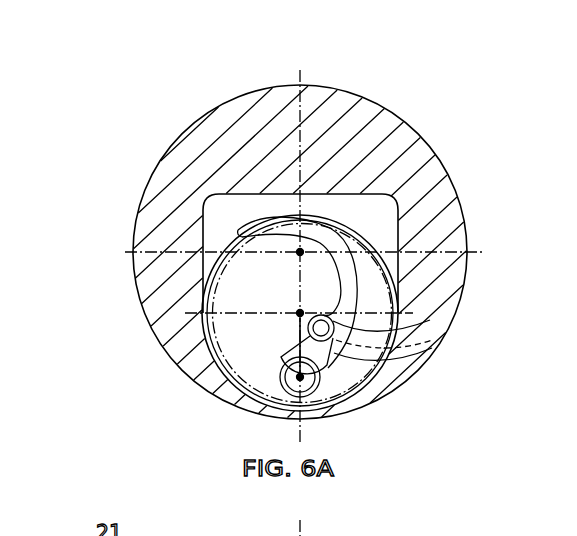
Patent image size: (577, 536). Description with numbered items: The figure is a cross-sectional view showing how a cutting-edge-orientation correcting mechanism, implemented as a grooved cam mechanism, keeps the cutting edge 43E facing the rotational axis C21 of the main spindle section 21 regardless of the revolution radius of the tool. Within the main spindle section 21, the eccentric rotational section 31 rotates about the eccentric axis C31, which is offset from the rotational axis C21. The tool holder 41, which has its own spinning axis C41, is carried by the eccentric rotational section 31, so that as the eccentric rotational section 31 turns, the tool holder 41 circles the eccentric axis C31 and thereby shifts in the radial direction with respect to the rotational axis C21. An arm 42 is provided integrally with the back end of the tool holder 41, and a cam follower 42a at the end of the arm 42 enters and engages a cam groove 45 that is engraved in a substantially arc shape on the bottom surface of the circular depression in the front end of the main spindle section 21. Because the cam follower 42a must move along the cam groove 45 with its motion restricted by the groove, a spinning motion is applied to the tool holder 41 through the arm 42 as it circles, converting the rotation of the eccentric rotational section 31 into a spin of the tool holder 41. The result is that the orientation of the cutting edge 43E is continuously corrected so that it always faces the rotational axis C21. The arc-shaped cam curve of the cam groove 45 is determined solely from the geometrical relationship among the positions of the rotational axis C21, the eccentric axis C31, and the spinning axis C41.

The main spindle section 21 is at (170, 143).
The eccentric rotational section 31 is at (222, 383).
The cutting edge 43E is at (292, 352).
The rotational axis of the main spindle section C21 is at (300, 252).
The eccentric axis C31 is at (300, 313).
The spinning axis of the tool holder C41 is at (300, 378).
The tool holder 41 is at (324, 391).
The arm 42 is at (338, 378).
The cam follower 42a is at (432, 340).
The cam groove 45 is at (430, 320).